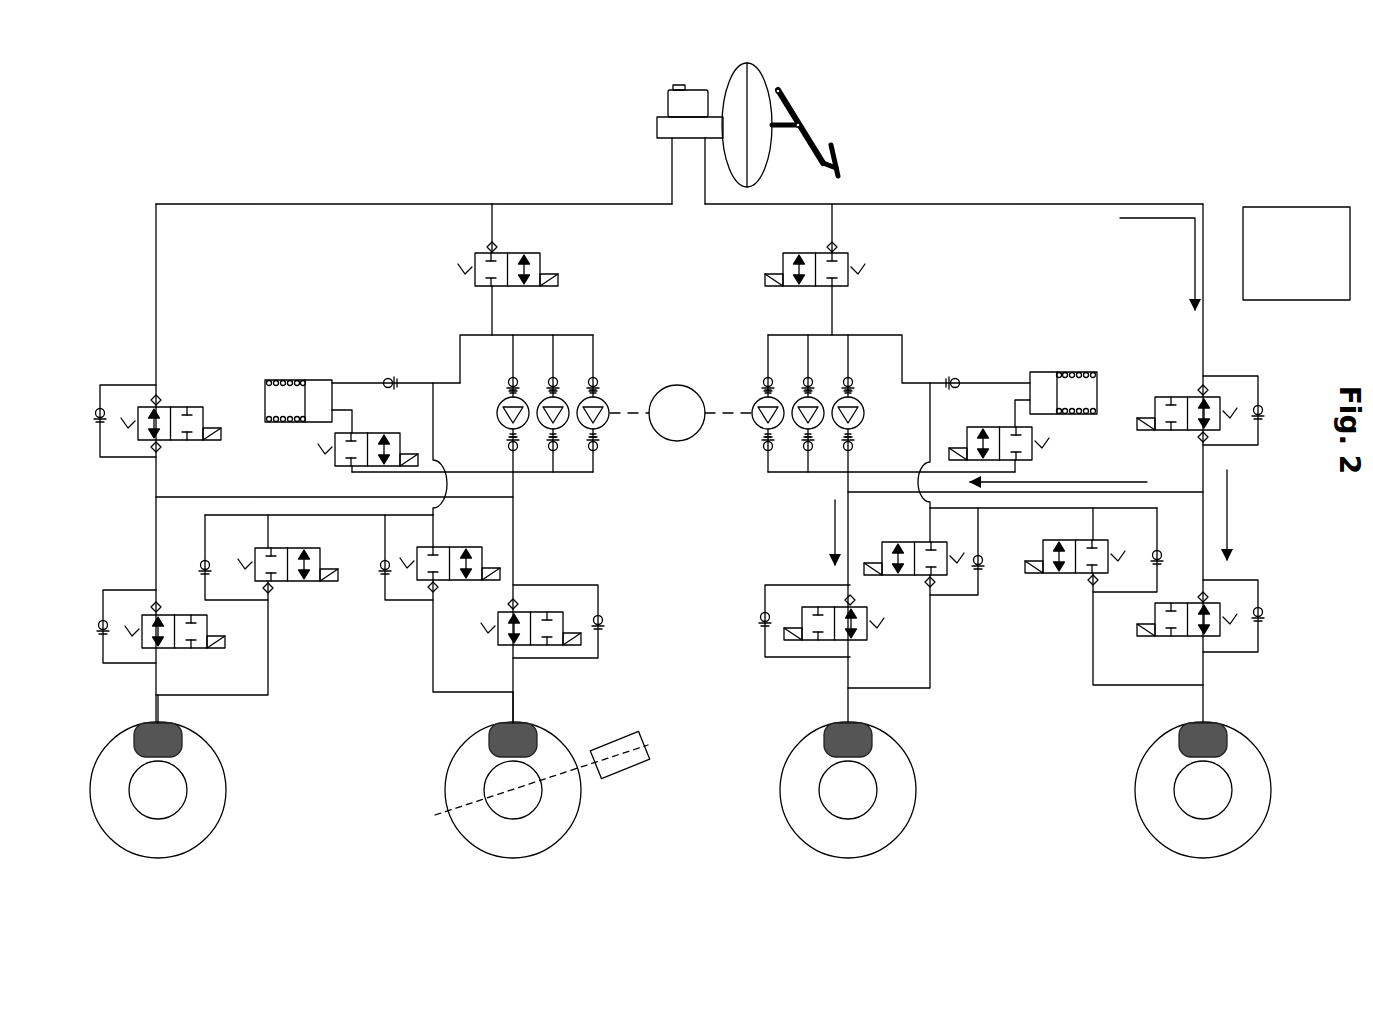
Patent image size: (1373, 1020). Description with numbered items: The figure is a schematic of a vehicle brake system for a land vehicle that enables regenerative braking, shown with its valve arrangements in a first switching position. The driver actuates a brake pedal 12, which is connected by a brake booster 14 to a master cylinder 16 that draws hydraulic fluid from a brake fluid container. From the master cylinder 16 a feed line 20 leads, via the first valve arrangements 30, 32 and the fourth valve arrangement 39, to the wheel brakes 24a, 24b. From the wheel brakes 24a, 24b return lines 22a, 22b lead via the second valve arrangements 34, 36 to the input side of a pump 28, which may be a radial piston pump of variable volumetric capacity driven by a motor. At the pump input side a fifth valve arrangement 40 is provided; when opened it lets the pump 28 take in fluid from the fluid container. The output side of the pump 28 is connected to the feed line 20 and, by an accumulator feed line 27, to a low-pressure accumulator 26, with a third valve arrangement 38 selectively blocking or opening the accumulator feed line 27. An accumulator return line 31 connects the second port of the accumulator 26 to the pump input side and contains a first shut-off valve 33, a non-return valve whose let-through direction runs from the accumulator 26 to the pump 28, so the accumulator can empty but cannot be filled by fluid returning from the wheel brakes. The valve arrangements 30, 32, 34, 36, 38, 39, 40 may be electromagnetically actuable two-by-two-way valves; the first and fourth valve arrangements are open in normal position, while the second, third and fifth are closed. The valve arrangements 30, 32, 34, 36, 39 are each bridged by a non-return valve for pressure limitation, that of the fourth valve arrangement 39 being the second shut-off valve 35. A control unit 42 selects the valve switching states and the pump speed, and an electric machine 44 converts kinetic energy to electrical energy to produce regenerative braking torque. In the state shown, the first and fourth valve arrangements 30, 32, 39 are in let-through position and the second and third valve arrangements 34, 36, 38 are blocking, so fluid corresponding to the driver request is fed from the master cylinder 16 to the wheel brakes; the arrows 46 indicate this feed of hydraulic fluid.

The brake pedal 12 is at (850, 178).
The brake booster 14 is at (776, 88).
The master cylinder 16 is at (655, 130).
The feed line 20 is at (328, 204).
The return line 22a is at (225, 700).
The return line 22b is at (440, 700).
The wheel brake 24a is at (202, 750).
The wheel brake 24b is at (482, 750).
The accumulator 26 is at (303, 378).
The accumulator feed line 27 is at (460, 472).
The pump 28 is at (612, 404).
The first valve arrangement 30 is at (222, 626).
The accumulator return line 31 is at (460, 335).
The first valve arrangement 32 is at (552, 600).
The first shut-off valve 33 is at (387, 377).
The second valve arrangement 34 is at (300, 591).
The second shut-off valve 35 is at (108, 395).
The second valve arrangement 36 is at (490, 553).
The third valve arrangement 38 is at (330, 470).
The fourth valve arrangement 39 is at (182, 399).
The fifth valve arrangement 40 is at (524, 248).
The control unit 42 is at (1290, 196).
The electric machine 44 is at (622, 731).
The arrows 46 is at (1143, 218).